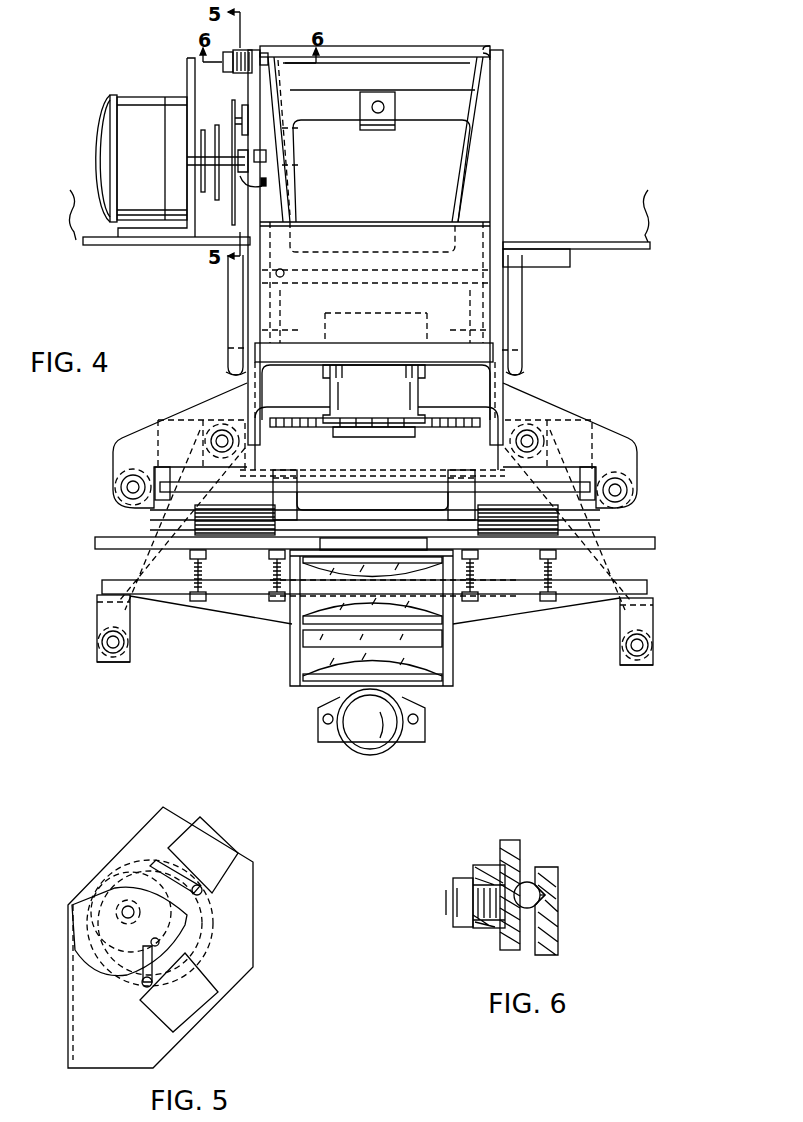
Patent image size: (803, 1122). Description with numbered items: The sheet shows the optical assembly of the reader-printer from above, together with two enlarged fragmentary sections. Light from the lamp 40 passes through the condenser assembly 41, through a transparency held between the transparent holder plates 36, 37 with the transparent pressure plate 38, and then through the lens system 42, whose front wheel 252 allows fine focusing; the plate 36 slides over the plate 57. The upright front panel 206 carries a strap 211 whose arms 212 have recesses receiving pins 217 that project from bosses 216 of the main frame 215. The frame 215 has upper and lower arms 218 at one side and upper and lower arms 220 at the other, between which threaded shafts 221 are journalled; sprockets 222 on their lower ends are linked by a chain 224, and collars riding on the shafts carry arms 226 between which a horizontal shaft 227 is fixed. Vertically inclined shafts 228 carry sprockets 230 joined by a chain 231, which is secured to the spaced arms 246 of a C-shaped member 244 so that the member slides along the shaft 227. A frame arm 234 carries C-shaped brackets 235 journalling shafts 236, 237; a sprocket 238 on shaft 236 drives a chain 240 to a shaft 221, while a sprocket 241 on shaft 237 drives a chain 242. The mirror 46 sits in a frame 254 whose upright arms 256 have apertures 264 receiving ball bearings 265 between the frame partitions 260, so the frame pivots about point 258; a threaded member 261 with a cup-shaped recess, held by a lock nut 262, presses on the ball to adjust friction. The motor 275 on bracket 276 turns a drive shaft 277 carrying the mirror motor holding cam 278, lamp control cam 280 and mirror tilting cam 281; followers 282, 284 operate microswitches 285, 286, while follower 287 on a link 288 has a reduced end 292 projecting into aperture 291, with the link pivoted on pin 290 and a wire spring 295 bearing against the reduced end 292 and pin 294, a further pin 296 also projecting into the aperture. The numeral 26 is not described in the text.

In FIG. 4, the top rail 26 is at (283, 78).
In FIG. 4, the transparent holder plate 36 is at (548, 535).
In FIG. 4, the transparent holder plate 37 is at (556, 520).
In FIG. 4, the transparent pressure plate 38 is at (548, 512).
In FIG. 4, the lamp 40 is at (400, 706).
In FIG. 4, the condenser assembly 41 is at (445, 602).
In FIG. 4, the lens system 42 is at (323, 380).
In FIG. 4, the mirror 46 is at (400, 161).
In FIG. 4, the plate 57 is at (642, 545).
In FIG. 4, the front panel 206 is at (100, 247).
In FIG. 4, the strap 211 is at (572, 258).
In FIG. 4, the arms 212 is at (227, 296).
In FIG. 4, the main frame 215 is at (478, 352).
In FIG. 4, the bosses 216 is at (236, 376).
In FIG. 4, the pins 217 is at (228, 348).
In FIG. 4, the upper and lower arms 218 is at (238, 386).
In FIG. 4, the upper and lower arms 220 is at (525, 394).
In FIG. 4, the shafts 221 is at (215, 440).
In FIG. 4, the sprockets 222 is at (216, 424).
In FIG. 4, the chain 224 is at (283, 470).
In FIG. 4, the arms 226 is at (196, 452).
In FIG. 4, the horizontally-extending shaft 227 is at (388, 482).
In FIG. 4, the vertically-inclined shafts 228 is at (128, 472).
In FIG. 4, the sprockets 230 is at (116, 488).
In FIG. 4, the chain 231 is at (352, 472).
In FIG. 4, the frame arm 234 is at (586, 582).
In FIG. 4, the C-shaped bracket 235 is at (96, 612).
In FIG. 4, the shaft 236 is at (125, 641).
In FIG. 4, the shaft 237 is at (649, 645).
In FIG. 4, the sprocket 238 is at (118, 663).
In FIG. 4, the chain 240 is at (140, 614).
In FIG. 4, the sprocket 241 is at (636, 666).
In FIG. 4, the chain 242 is at (647, 566).
In FIG. 4, the C-shaped member 244 is at (340, 511).
In FIG. 4, the arms 246 is at (297, 474).
In FIG. 4, the wheel 252 is at (445, 418).
In FIG. 4, the mirror frame 254 is at (419, 90).
In FIG. 6, the upright arms 256 is at (558, 880).
In FIG. 6, the pivot point 258 is at (547, 898).
In FIG. 4, the upright partitions 260 is at (262, 52).
In FIG. 6, the upright partitions 260 is at (517, 848).
In FIG. 4, the threaded member 261 is at (233, 69).
In FIG. 6, the threaded member 261 is at (480, 866).
In FIG. 4, the lock nut 262 is at (234, 50).
In FIG. 6, the lock nut 262 is at (455, 878).
In FIG. 6, the apertures 264 is at (558, 893).
In FIG. 4, the ball bearings 265 is at (268, 56).
In FIG. 6, the ball bearings 265 is at (530, 882).
In FIG. 4, the motor 275 is at (98, 128).
In FIG. 5, the motor 275 is at (208, 946).
In FIG. 4, the bracket 276 is at (188, 94).
In FIG. 5, the bracket 276 is at (255, 870).
In FIG. 4, the drive shaft 277 is at (198, 142).
In FIG. 5, the drive shaft 277 is at (121, 914).
In FIG. 4, the mirror motor holding cam 278 is at (200, 172).
In FIG. 5, the mirror motor holding cam 278 is at (118, 866).
In FIG. 4, the lamp control cam 280 is at (222, 201).
In FIG. 5, the lamp control cam 280 is at (100, 880).
In FIG. 4, the mirror tilting cam 281 is at (232, 222).
In FIG. 5, the mirror tilting cam 281 is at (78, 895).
In FIG. 5, the follower 282 is at (153, 866).
In FIG. 5, the follower 284 is at (160, 940).
In FIG. 5, the microswitch 285 is at (224, 845).
In FIG. 5, the microswitch 286 is at (216, 992).
In FIG. 4, the follower 287 is at (240, 178).
In FIG. 4, the link 288 is at (245, 105).
In FIG. 4, the pin 290 is at (242, 120).
In FIG. 4, the aperture 291 is at (280, 100).
In FIG. 4, the reduced end 292 is at (266, 162).
In FIG. 4, the pin 294 is at (266, 182).
In FIG. 4, the wire spring 295 is at (290, 166).
In FIG. 4, the pin 296 is at (300, 128).